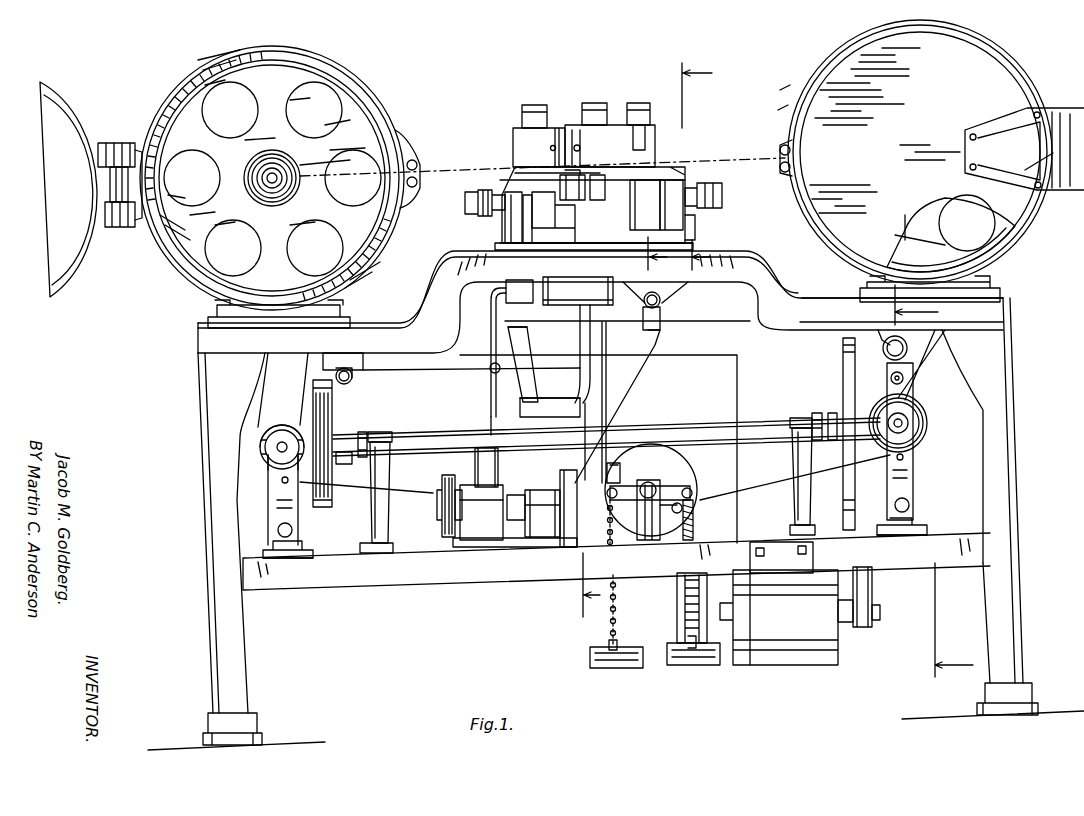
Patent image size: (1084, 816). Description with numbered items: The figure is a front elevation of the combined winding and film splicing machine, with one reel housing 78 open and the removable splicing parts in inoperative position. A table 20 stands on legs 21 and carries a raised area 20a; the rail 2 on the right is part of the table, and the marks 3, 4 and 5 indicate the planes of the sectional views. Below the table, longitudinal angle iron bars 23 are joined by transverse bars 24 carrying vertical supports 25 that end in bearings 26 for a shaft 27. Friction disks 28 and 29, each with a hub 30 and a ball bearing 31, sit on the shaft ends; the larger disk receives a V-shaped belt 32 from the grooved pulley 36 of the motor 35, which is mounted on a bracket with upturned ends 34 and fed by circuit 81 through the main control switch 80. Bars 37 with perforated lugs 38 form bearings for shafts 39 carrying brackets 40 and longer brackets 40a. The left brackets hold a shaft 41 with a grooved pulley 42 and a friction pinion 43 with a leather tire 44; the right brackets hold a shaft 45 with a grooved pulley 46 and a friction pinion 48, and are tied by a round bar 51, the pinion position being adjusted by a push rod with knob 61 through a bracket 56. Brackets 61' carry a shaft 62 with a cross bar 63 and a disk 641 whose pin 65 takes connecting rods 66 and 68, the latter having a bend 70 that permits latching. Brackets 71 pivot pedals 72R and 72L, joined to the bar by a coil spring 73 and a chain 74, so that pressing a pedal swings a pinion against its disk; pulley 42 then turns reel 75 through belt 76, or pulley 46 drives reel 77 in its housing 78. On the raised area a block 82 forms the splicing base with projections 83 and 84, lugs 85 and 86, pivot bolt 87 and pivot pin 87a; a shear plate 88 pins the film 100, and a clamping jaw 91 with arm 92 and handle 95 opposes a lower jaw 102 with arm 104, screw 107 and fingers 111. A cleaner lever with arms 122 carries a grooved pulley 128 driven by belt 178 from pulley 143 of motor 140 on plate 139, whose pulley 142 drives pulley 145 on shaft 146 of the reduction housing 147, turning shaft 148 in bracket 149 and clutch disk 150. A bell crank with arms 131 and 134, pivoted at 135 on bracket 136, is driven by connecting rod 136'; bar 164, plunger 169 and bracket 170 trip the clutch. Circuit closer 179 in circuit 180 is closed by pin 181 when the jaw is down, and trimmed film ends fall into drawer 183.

The frame top rail right portion 2 is at (902, 316).
The section line 3- 3 is at (630, 430).
The section line 4- 4 is at (934, 484).
The section line 5- 5 is at (703, 162).
The table 20 is at (198, 349).
The raised area of the table 20a is at (700, 247).
The legs 21 is at (212, 645).
The longitudinal angle iron bars 23 is at (326, 585).
The transverse bars 24 is at (370, 553).
The vertical supports 25 is at (386, 472).
The bearings 26 is at (380, 434).
The shaft 27 is at (727, 432).
The friction disk 28 is at (332, 406).
The friction disk 29 is at (843, 362).
The hub 30 is at (343, 450).
The ball bearing 31 is at (361, 432).
The V-shaped belt 32 is at (872, 578).
The upturned ends of bracket 34 is at (781, 557).
The motor 35 is at (779, 617).
The grooved pulley 36 is at (872, 618).
The bars 37 is at (289, 556).
The perforated lugs 38 is at (273, 542).
The shafts 39 is at (293, 530).
The brackets 40 is at (270, 514).
The brackets 40a is at (913, 475).
The shaft 41 is at (282, 442).
The grooved pulley 42 is at (262, 448).
The friction pinion 43 is at (266, 456).
The leather tire 44 is at (260, 442).
The shaft 45 is at (903, 424).
The grooved pulley 46 is at (913, 428).
The friction pinion 48 is at (920, 435).
The round bar 51 is at (903, 379).
The bracket 56 is at (880, 338).
The knob 61 is at (926, 347).
The bracket 61' is at (620, 536).
The shaft 62 is at (650, 486).
The cross bar 63 is at (692, 474).
The disk 641 is at (680, 460).
The pivot pin 65 is at (682, 509).
The connecting rod 66 is at (764, 490).
The connecting rod 68 is at (400, 490).
The bend 70 is at (694, 524).
The brackets 71 is at (677, 598).
The pedal 72L is at (616, 665).
The pedal 72R is at (688, 662).
The coil spring 73 is at (684, 617).
The chain 74 is at (608, 622).
The reel 75 is at (272, 187).
The belt 76 is at (305, 380).
The reel 77 is at (931, 161).
The housing 78 is at (170, 262).
The main control switch 80 is at (350, 380).
The circuit 81 is at (457, 370).
The block 82 is at (672, 238).
The projection 83 is at (612, 240).
The projection 84 is at (523, 238).
The lug 85 is at (655, 190).
The lug 86 is at (512, 170).
The pivot bolt 87 is at (466, 205).
The pivot pin 87a is at (723, 194).
The steel shear plate 88 is at (560, 210).
The clamping jaw 91 is at (513, 140).
The arm 92 is at (505, 226).
The handle 95 is at (527, 108).
The film 100 is at (778, 158).
The lower jaw 102 is at (627, 130).
The arm 104 is at (688, 178).
The screw 107 is at (610, 146).
The fingers 111 is at (683, 180).
The arms of bifurcated lever 122 is at (580, 183).
The grooved pulley 128 is at (603, 185).
The arm 131 is at (530, 340).
The arm 134 is at (585, 376).
The pivot 135 is at (520, 410).
The bracket 136 is at (493, 344).
The connecting rod 136' is at (620, 441).
The plate 139 is at (545, 547).
The motor 140 is at (498, 466).
The grooved pulley 142 is at (446, 480).
The pulley 143 is at (618, 472).
The pulley 145 is at (445, 520).
The shaft 146 is at (484, 510).
The housing 147 is at (484, 507).
The shaft 148 is at (516, 497).
The bracket 149 is at (550, 506).
The clutch disk 150 is at (567, 517).
The bar 164 is at (636, 382).
The plunger 169 is at (660, 318).
The bracket 170 is at (660, 298).
The belt 178 is at (606, 338).
The circuit closer 179 is at (519, 283).
The circuit 180 is at (491, 404).
The pin 181 is at (500, 252).
The drawer 183 is at (578, 291).